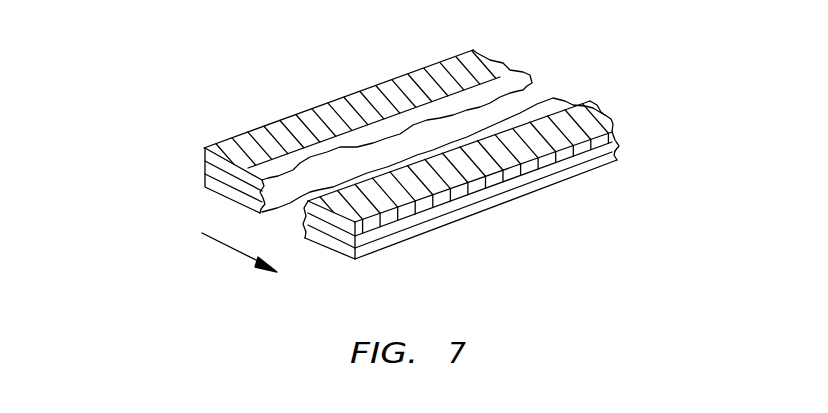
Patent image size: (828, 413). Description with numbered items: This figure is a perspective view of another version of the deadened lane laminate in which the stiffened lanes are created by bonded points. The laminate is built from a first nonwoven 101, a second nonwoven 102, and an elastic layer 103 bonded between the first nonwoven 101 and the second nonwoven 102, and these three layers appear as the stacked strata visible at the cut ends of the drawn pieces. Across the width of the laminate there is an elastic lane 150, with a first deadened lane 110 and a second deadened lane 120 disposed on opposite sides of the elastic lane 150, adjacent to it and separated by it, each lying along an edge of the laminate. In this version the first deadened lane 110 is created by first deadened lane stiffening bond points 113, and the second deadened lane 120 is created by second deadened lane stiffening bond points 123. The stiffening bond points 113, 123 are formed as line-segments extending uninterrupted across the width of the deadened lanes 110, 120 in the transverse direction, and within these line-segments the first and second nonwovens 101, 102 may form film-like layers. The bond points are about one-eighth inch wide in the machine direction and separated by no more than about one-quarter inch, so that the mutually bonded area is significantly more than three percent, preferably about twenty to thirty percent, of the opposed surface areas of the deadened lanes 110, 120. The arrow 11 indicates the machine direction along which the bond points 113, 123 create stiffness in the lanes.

The first deadened lane 110 is at (368, 113).
The first deadened lane stiffening bond points 113 is at (294, 112).
The elastic lane 150 is at (528, 57).
The second deadened lane 120 is at (502, 191).
The first nonwoven 101 is at (615, 128).
The elastic layer 103 is at (620, 140).
The second nonwoven 102 is at (620, 160).
The second deadened lane stiffening bond points 123 is at (446, 173).
The direction arrow 11 is at (222, 246).